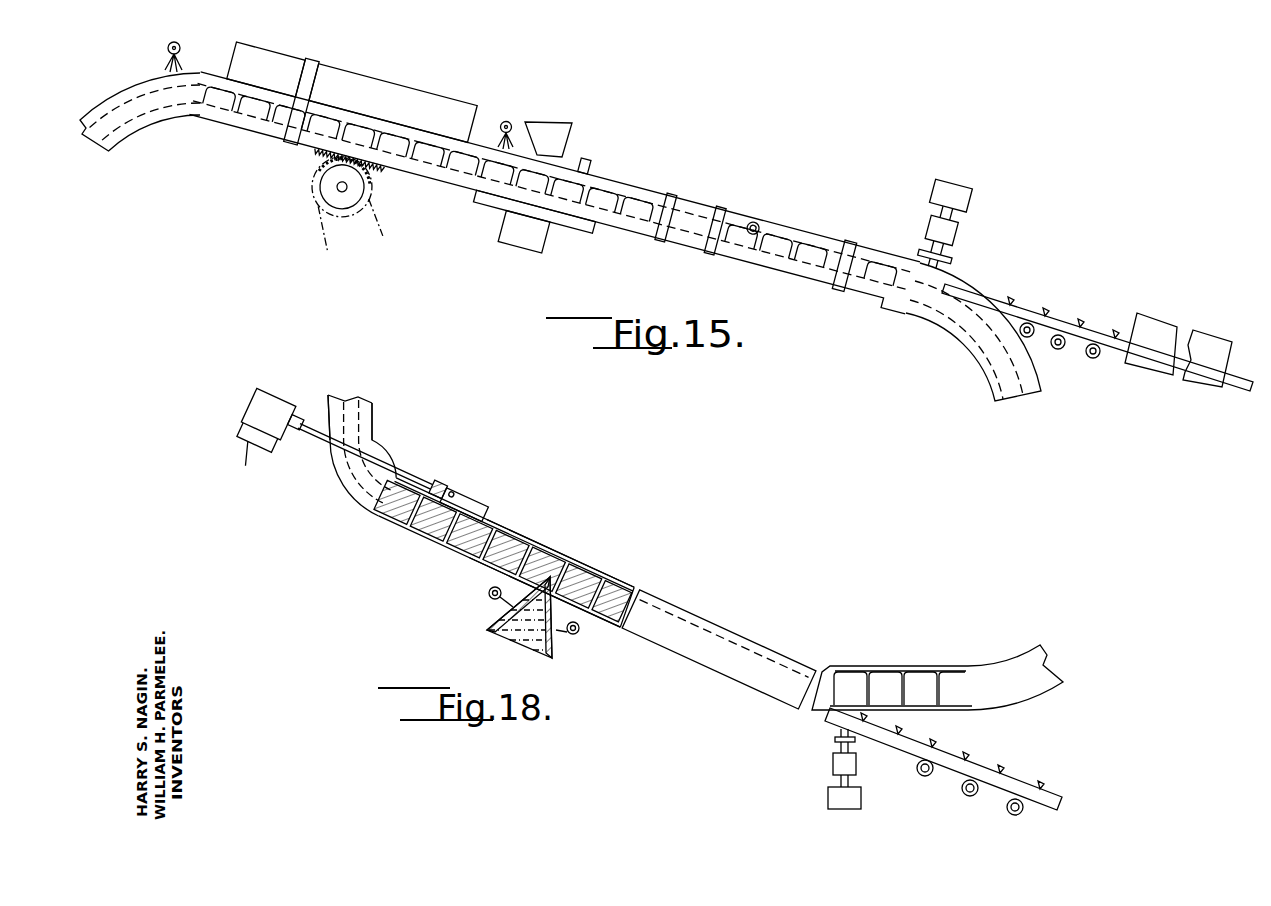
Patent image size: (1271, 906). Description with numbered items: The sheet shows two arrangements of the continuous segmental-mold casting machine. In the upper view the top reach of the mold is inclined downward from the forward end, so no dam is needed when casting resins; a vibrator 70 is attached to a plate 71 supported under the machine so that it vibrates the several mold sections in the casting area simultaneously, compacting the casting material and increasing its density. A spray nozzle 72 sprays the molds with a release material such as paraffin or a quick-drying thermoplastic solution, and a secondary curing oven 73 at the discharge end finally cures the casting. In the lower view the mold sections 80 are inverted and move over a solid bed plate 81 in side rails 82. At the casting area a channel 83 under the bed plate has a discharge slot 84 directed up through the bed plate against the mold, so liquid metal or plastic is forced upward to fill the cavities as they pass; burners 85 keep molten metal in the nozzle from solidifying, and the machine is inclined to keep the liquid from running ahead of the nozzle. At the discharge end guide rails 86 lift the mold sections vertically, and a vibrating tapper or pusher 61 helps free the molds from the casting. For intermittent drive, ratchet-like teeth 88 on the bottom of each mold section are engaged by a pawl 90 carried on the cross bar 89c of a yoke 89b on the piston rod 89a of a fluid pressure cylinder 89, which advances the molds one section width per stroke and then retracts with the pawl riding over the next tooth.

In FIG. 15, the spray nozzle 72 is at (181, 50).
In FIG. 15, the vibrator 70 is at (515, 245).
In FIG. 15, the plate 71 is at (578, 232).
In FIG. 15, the secondary curing oven 73 is at (1155, 328).
In FIG. 18, the fluid pressure cylinder 89 is at (259, 393).
In FIG. 18, the yoke 89b is at (328, 438).
In FIG. 18, the piston rod 89a is at (297, 432).
In FIG. 18, the cross bar 89c is at (442, 488).
In FIG. 18, the pawl 90 is at (486, 505).
In FIG. 18, the ratchet-like teeth 88 is at (527, 548).
In FIG. 18, the bed plate 81 is at (428, 542).
In FIG. 18, the mold sections 80 is at (464, 541).
In FIG. 18, the burners 85 is at (489, 595).
In FIG. 18, the discharge slot 84 is at (580, 631).
In FIG. 18, the channel 83 is at (556, 652).
In FIG. 18, the side rails 82 is at (712, 633).
In FIG. 18, the guide rails 86 is at (914, 672).
In FIG. 18, the vibrating tapper arrangement or pusher 61 is at (826, 798).